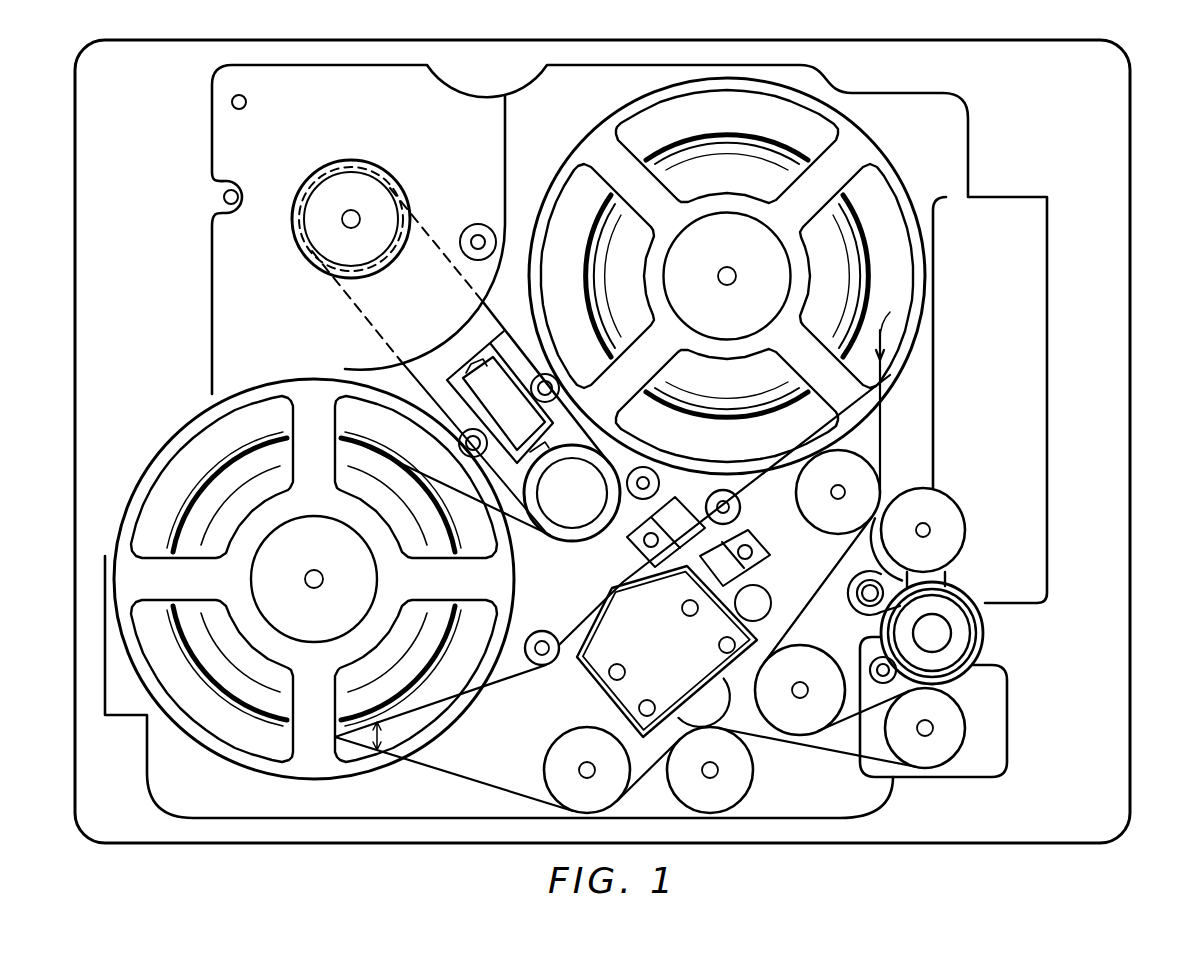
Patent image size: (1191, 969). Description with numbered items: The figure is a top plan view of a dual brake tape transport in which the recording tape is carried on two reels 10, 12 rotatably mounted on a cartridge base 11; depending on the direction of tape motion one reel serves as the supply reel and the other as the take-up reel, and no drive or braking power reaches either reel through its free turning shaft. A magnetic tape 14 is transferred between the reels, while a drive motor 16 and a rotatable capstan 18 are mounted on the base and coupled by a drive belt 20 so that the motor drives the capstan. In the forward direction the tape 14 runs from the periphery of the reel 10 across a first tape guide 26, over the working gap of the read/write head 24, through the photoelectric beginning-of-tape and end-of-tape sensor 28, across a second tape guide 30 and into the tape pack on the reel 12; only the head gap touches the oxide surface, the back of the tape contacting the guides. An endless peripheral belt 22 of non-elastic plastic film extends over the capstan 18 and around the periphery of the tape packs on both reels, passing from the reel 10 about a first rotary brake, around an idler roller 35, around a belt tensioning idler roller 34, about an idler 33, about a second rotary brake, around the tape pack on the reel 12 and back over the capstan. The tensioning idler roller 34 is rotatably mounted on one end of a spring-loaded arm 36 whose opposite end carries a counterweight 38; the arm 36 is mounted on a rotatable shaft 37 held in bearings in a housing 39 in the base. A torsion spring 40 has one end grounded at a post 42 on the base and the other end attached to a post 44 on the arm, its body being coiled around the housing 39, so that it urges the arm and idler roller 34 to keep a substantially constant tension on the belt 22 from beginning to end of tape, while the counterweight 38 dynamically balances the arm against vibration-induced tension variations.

The reel 10 is at (226, 762).
The cartridge base 11 is at (1131, 591).
The reel 12 is at (890, 162).
The magnetic tape 14 is at (428, 470).
The drive motor 16 is at (392, 177).
The capstan 18 is at (566, 542).
The drive belt 20 is at (505, 332).
The peripheral belt 22 is at (882, 442).
The read/write head 24 is at (592, 672).
The first tape guide 26 is at (547, 632).
The beginning of tape/end of tape sensor 28 is at (637, 543).
The second tape guide 30 is at (741, 507).
The idler 33 is at (795, 648).
The belt tensioning idler roller 34 is at (927, 770).
The idler roller 35 is at (744, 797).
The spring-loaded arm 36 is at (946, 578).
The rotatable shaft 37 is at (952, 633).
The counterweight 38 is at (951, 500).
The housing 39 is at (960, 650).
The torsion spring 40 is at (958, 630).
The post 42 is at (851, 590).
The post 44 is at (871, 663).